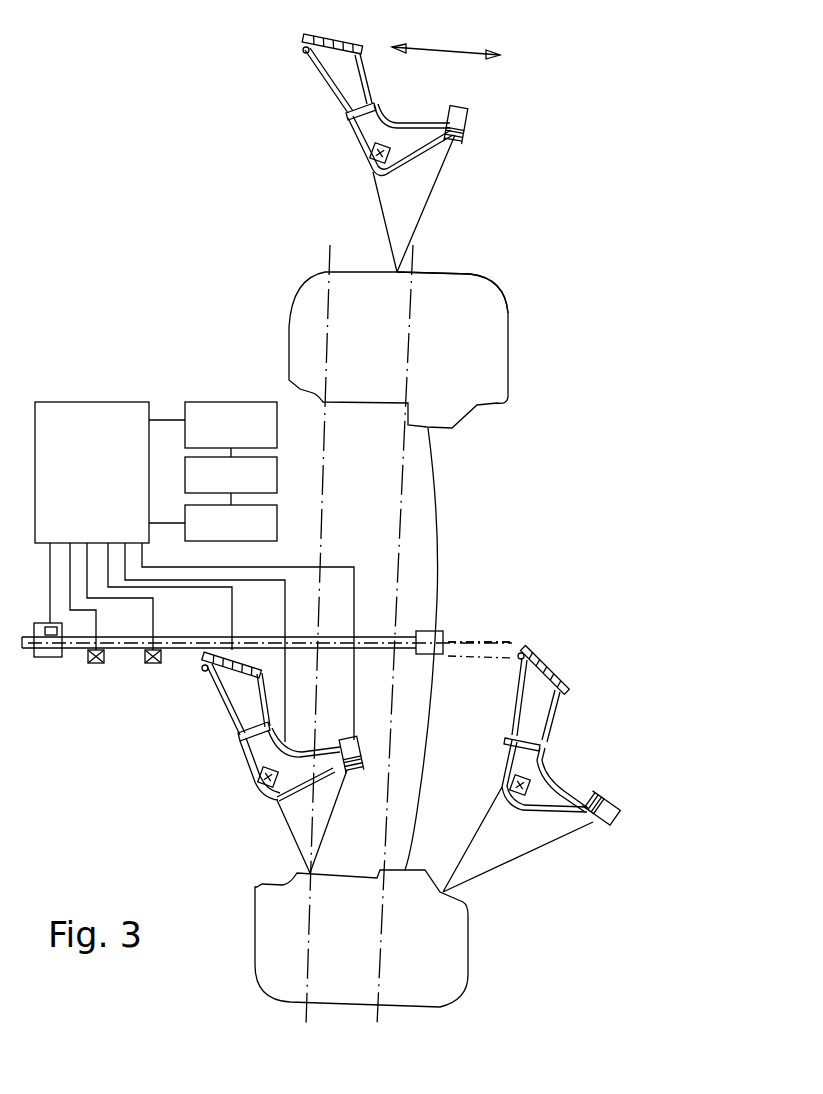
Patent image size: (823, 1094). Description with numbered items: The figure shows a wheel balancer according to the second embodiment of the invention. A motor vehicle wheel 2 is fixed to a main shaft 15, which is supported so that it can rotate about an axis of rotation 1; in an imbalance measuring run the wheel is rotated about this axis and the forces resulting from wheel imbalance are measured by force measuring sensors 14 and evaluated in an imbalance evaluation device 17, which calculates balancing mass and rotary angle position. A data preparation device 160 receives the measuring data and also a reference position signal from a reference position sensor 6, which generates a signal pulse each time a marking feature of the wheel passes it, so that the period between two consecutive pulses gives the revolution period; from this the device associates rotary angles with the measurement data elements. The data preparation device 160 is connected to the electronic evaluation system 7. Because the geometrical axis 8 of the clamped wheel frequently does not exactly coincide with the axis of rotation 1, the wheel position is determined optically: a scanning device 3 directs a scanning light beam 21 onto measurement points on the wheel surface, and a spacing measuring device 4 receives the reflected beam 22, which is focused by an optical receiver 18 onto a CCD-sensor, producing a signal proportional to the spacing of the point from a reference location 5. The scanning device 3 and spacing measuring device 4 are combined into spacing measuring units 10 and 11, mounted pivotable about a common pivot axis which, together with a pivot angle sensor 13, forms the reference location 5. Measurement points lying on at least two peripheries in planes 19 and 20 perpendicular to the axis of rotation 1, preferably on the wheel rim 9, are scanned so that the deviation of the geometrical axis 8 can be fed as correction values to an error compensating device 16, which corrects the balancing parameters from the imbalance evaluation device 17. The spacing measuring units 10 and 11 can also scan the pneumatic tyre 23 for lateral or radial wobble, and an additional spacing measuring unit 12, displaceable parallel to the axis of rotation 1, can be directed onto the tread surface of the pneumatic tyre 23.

The axis of rotation 1 is at (470, 645).
The motor vehicle wheel 2 is at (458, 492).
The scanning device 3 is at (358, 755).
The spacing measuring device 4 is at (235, 657).
The reference location 5 is at (282, 786).
The reference position sensor 6 is at (48, 657).
The electronic evaluation system 7 is at (277, 532).
The geometrical axis 8 is at (470, 660).
The wheel rim 9 is at (364, 432).
The spacing measuring unit 10 is at (265, 762).
The spacing measuring unit 11 is at (558, 747).
The spacing measuring unit 12 is at (336, 146).
The pivot angle sensor 13 is at (263, 786).
The force measuring sensors 14 is at (96, 663).
The main shaft 15 is at (253, 635).
The error compensating device 16 is at (277, 478).
The imbalance evaluation device 17 is at (277, 431).
The optical receiver 18 is at (240, 738).
The plane 19 is at (302, 987).
The plane 20 is at (372, 988).
The scanning light beam 21 is at (330, 815).
The reflected beam 22 is at (283, 820).
The pneumatic tyre 23 is at (470, 292).
The data preparation device 160 is at (42, 400).